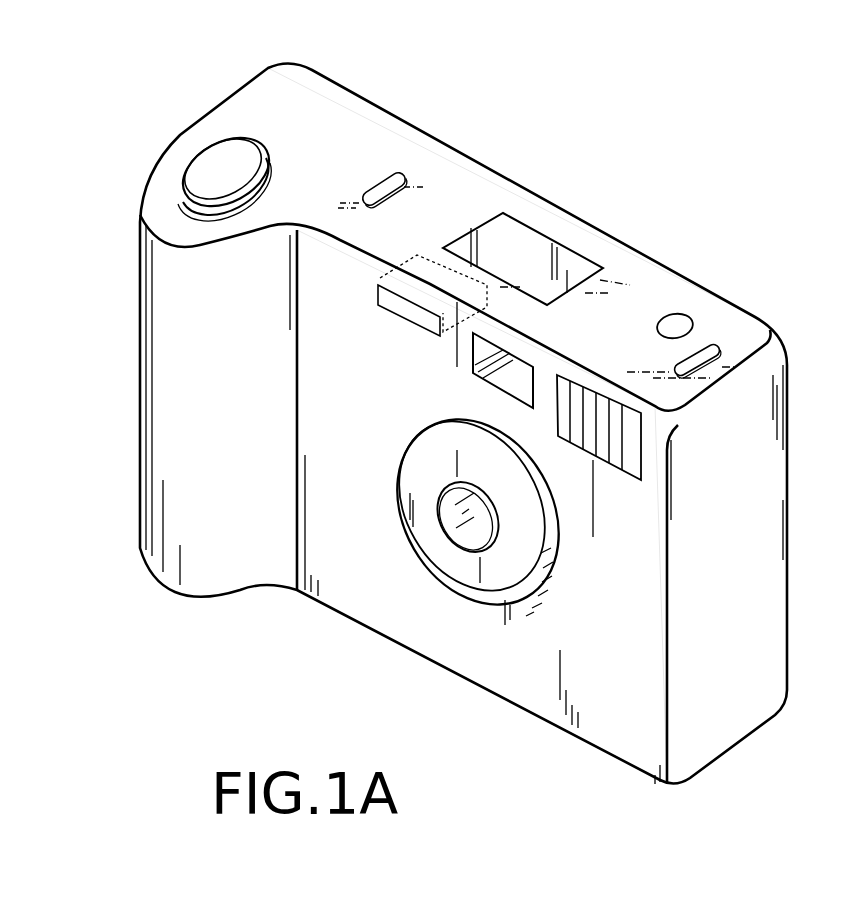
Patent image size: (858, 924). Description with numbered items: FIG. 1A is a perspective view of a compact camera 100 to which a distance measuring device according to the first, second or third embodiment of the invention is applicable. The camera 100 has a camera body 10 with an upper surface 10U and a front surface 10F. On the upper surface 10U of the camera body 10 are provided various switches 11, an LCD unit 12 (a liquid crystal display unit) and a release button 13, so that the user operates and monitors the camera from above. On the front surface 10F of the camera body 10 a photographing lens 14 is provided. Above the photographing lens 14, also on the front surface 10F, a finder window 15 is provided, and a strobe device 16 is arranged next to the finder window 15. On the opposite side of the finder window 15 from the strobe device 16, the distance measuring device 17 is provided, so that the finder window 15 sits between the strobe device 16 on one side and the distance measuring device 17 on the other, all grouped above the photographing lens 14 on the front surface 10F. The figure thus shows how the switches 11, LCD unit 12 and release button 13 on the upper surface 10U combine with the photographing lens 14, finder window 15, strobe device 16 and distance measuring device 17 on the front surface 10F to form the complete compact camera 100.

The compact camera 100 is at (286, 632).
The camera body 10 is at (763, 557).
The upper surface 10U is at (340, 113).
The front surface 10F is at (558, 707).
The switches 11 is at (708, 342).
The LCD unit 12 is at (573, 250).
The release button 13 is at (220, 163).
The photographing lens 14 is at (457, 537).
The finder window 15 is at (493, 373).
The strobe device 16 is at (620, 452).
The distance measuring device 17 is at (420, 253).